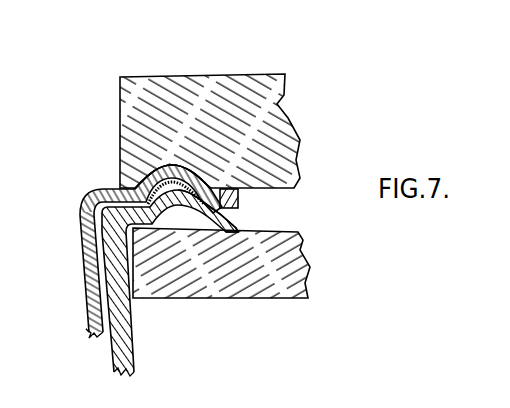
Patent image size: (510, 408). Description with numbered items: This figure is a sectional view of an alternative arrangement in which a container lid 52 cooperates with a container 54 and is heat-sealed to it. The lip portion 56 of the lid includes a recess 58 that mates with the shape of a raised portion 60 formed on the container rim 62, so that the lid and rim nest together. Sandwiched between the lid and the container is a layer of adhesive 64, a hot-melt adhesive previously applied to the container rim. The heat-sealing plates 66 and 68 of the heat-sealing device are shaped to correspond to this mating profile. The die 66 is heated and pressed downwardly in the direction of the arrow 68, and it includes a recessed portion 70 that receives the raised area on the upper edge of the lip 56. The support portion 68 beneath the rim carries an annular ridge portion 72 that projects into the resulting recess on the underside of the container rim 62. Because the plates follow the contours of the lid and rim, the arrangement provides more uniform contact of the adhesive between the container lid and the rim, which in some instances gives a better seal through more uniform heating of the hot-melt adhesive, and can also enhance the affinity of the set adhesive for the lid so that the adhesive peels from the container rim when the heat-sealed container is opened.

The container lid 52 is at (76, 196).
The container 54 is at (131, 345).
The lip portion 56 is at (232, 197).
The recess 58 is at (178, 183).
The raised portion 60 is at (190, 220).
The container rim 62 is at (232, 234).
The layer of adhesive 64 is at (200, 185).
The heat-sealing plate (die) 66 is at (163, 88).
The heat-sealing plate (support portion) 68 is at (245, 58).
The recessed portion 70 is at (138, 182).
The annular ridge portion 72 is at (168, 220).